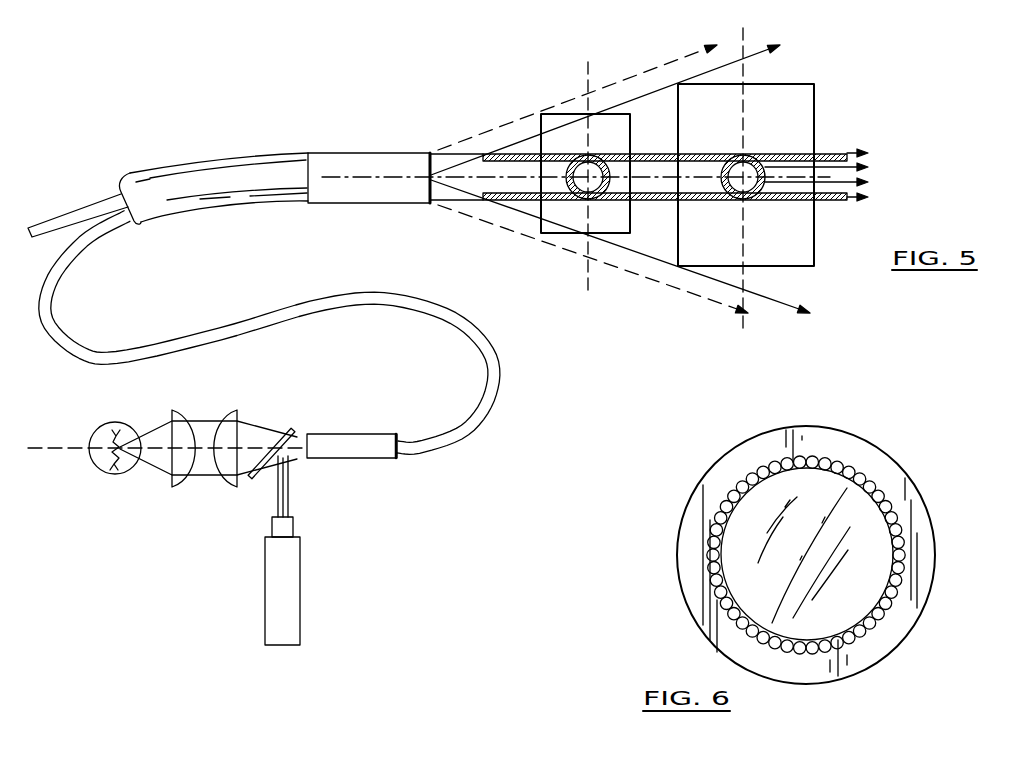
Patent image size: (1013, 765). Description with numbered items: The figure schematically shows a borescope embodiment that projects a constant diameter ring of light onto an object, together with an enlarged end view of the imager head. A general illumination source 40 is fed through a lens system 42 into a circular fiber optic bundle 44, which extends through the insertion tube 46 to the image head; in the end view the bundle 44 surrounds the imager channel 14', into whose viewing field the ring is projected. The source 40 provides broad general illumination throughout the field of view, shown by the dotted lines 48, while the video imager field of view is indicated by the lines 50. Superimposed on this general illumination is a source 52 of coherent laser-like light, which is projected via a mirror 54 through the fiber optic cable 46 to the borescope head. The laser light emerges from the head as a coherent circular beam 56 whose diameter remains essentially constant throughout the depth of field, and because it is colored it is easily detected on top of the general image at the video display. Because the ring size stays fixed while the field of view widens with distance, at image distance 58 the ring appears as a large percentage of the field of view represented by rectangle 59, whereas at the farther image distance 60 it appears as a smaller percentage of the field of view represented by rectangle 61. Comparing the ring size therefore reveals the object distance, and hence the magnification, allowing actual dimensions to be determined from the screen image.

In FIG. 5, the general illumination source 40 is at (114, 474).
In FIG. 5, the lens system 42 is at (208, 485).
In FIG. 5, the insertion tube 46 is at (416, 299).
In FIG. 5, the dotted lines 48 is at (657, 284).
In FIG. 5, the lines 50 is at (654, 257).
In FIG. 5, the source of coherent laser-like light 52 is at (265, 592).
In FIG. 5, the mirror 54 is at (291, 430).
In FIG. 5, the coherent circular beam 56 is at (527, 153).
In FIG. 5, the image distance 58 is at (588, 136).
In FIG. 5, the rectangle 59 is at (555, 113).
In FIG. 5, the image distance 60 is at (744, 107).
In FIG. 5, the rectangle 61 is at (816, 102).
In FIG. 6, the circular fiber optic bundle 44 is at (705, 543).
In FIG. 6, the imager channel 14' is at (826, 525).